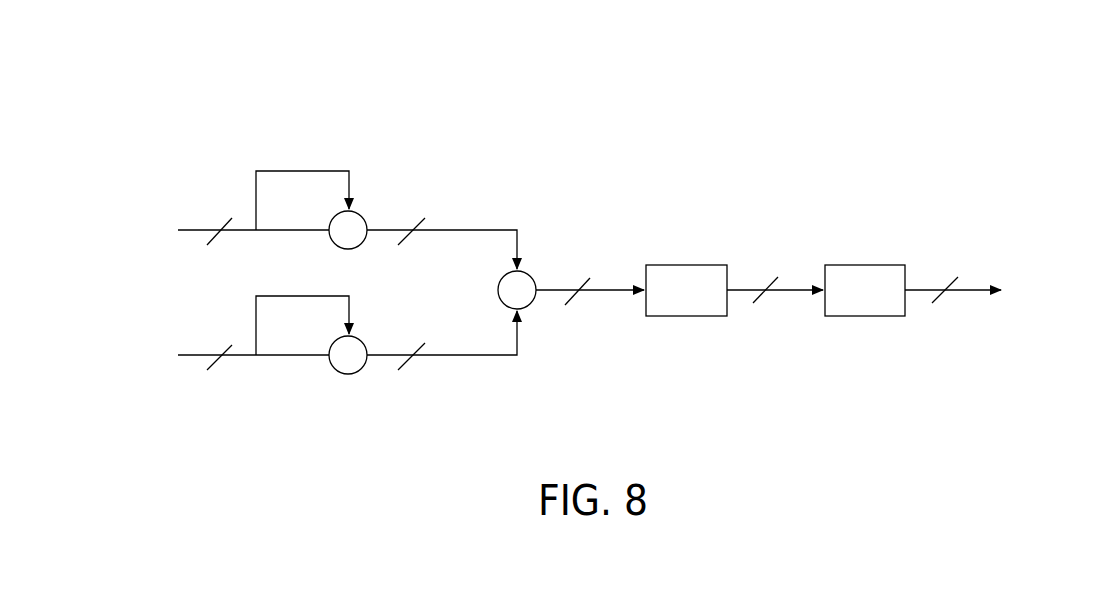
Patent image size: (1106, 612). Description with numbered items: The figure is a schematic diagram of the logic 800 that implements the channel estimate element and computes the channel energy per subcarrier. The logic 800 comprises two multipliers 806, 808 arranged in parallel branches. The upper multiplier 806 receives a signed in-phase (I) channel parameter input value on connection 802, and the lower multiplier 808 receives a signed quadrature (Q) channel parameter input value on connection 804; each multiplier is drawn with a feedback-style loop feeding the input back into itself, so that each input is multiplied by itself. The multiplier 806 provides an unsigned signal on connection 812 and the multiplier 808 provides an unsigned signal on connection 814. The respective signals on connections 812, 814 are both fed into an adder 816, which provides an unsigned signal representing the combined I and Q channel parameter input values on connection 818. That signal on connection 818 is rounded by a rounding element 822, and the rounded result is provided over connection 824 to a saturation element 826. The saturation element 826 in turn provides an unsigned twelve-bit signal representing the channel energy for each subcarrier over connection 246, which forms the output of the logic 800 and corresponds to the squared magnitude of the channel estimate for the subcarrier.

The logic 800 is at (170, 99).
The connection 802 is at (197, 230).
The connection 804 is at (186, 357).
The multiplier 806 is at (364, 213).
The multiplier 808 is at (350, 375).
The connection 812 is at (460, 230).
The connection 814 is at (517, 357).
The adder 816 is at (531, 276).
The connection 818 is at (608, 288).
The rounding element 822 is at (690, 265).
The connection 824 is at (792, 288).
The saturation element 826 is at (866, 265).
The connection 246 is at (978, 288).